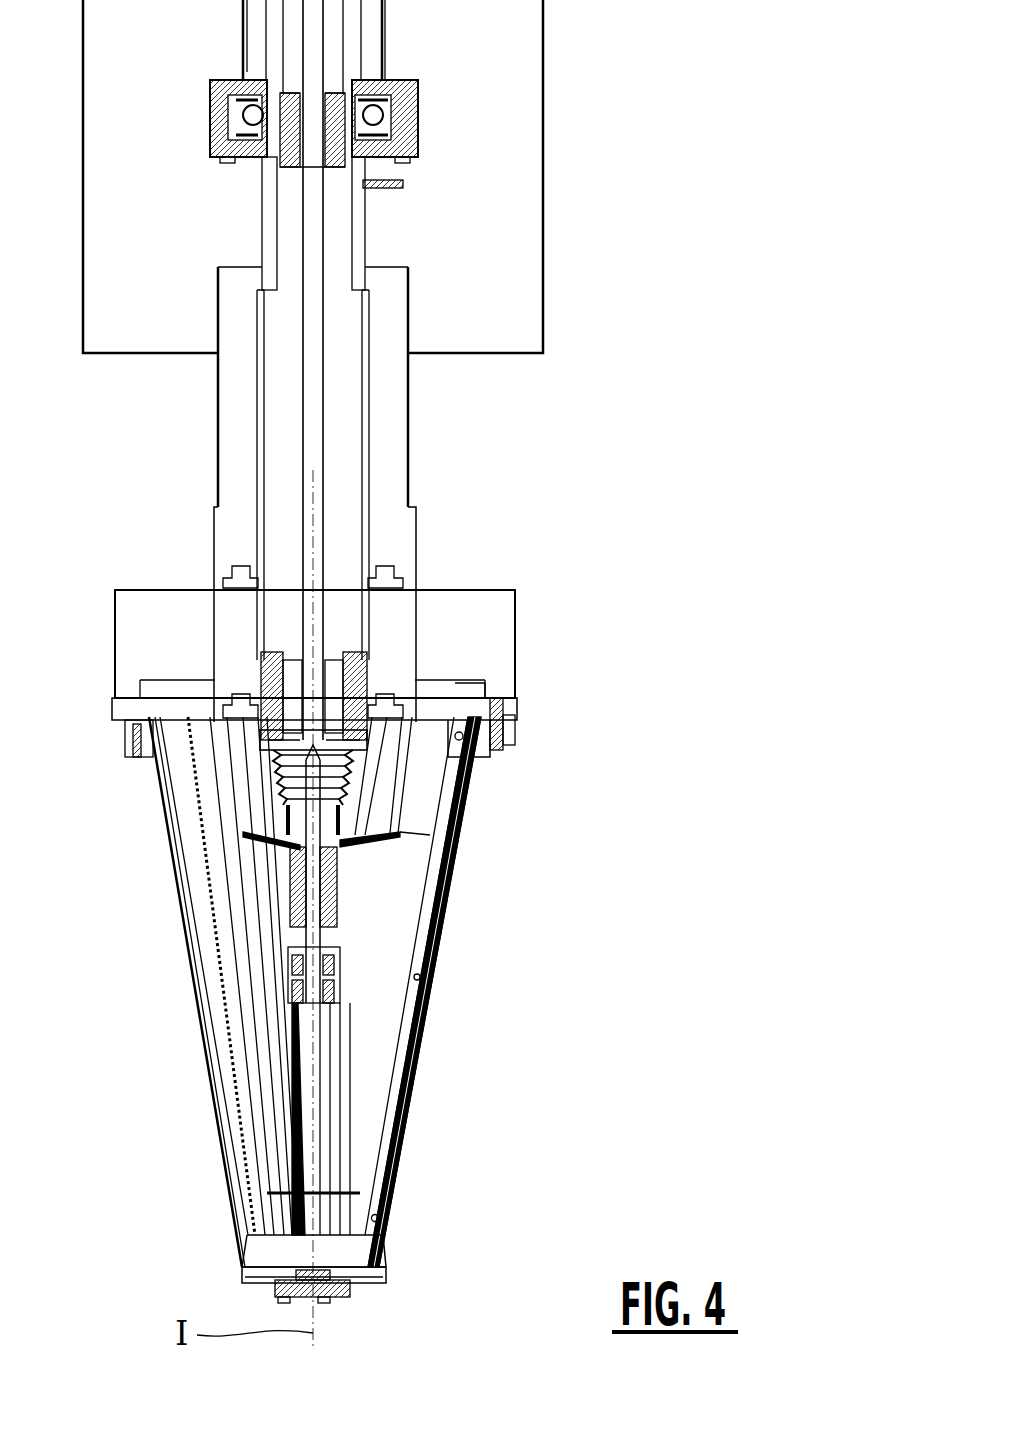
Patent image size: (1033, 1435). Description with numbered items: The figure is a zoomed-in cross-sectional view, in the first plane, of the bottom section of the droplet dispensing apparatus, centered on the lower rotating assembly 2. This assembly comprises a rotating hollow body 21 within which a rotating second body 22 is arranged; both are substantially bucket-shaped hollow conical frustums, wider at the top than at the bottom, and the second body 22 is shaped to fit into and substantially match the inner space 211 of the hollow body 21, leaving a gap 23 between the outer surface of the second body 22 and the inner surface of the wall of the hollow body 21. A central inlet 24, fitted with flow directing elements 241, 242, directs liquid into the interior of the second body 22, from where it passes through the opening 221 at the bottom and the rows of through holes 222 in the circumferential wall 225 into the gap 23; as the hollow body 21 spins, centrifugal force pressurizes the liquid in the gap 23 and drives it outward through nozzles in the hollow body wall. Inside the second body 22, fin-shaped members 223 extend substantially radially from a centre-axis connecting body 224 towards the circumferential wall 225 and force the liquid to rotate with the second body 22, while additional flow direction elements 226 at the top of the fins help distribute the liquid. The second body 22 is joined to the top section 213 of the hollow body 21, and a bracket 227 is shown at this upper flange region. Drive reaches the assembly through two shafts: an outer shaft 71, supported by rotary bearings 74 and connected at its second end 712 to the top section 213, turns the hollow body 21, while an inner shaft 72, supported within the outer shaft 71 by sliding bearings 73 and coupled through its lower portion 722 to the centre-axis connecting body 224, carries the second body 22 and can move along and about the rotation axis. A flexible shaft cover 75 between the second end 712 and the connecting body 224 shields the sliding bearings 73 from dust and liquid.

The lower rotating assembly 2 is at (668, 850).
The rotating hollow body 21 is at (383, 1240).
The inner space 211 is at (425, 1045).
The top section 213 is at (478, 707).
The rotating second body 22 is at (405, 1150).
The opening 221 is at (283, 1237).
The through holes 222 is at (238, 1107).
The fin-shaped members 223 is at (385, 940).
The centre-axis connecting body 224 is at (340, 890).
The circumferential wall 225 is at (425, 1013).
The additional flow direction elements 226 is at (385, 845).
The bracket 227 is at (455, 757).
The gap 23 is at (413, 1083).
The central inlet 24 is at (390, 395).
The flow directing element 241 is at (380, 572).
The flow directing element 242 is at (380, 690).
The outer shaft 71 is at (358, 232).
The second end 712 is at (372, 730).
The inner shaft 72 is at (312, 62).
The inner shaft 722 is at (315, 930).
The sliding bearings 73 is at (297, 128).
The rotary bearings 74 is at (253, 117).
The flexible shaft cover 75 is at (268, 770).